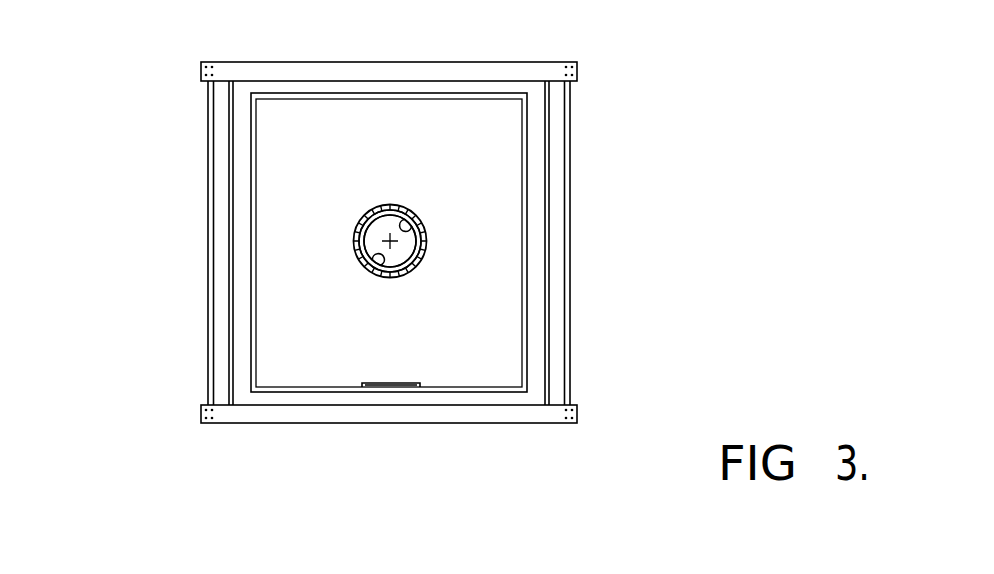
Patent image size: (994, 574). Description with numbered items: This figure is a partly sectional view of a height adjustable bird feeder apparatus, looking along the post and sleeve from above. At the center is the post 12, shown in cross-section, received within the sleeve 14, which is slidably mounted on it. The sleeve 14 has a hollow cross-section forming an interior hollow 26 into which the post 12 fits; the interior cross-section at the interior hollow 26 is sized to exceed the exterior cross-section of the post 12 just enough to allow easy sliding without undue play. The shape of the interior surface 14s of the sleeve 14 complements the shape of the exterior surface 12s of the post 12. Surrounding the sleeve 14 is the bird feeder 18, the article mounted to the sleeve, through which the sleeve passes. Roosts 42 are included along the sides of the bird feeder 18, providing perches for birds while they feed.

The bird feeder 18 is at (607, 207).
The roosts 42 is at (205, 320).
The sleeve 14 is at (448, 238).
The interior surface of the sleeve 14s is at (413, 210).
The post 12 is at (424, 277).
The exterior surface of the post 12s is at (374, 212).
The interior hollow 26 is at (362, 264).